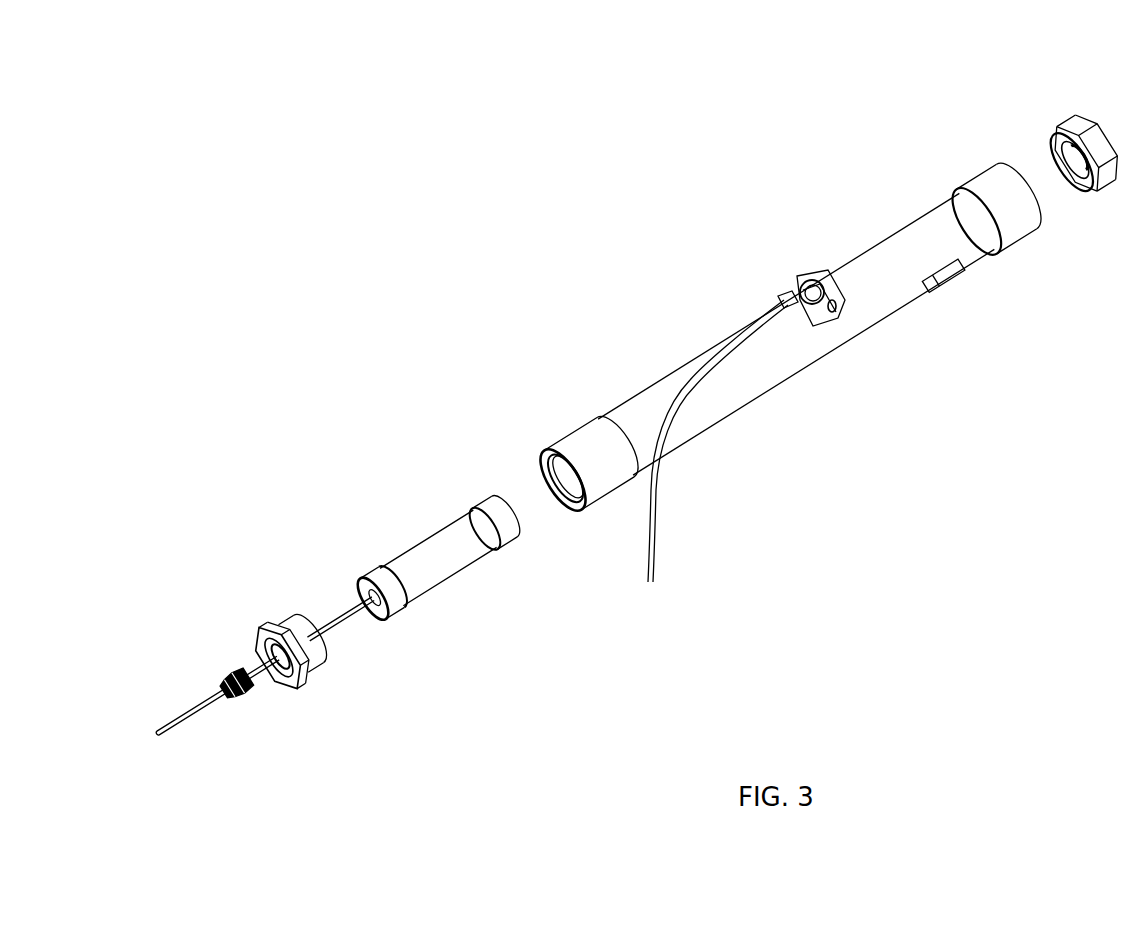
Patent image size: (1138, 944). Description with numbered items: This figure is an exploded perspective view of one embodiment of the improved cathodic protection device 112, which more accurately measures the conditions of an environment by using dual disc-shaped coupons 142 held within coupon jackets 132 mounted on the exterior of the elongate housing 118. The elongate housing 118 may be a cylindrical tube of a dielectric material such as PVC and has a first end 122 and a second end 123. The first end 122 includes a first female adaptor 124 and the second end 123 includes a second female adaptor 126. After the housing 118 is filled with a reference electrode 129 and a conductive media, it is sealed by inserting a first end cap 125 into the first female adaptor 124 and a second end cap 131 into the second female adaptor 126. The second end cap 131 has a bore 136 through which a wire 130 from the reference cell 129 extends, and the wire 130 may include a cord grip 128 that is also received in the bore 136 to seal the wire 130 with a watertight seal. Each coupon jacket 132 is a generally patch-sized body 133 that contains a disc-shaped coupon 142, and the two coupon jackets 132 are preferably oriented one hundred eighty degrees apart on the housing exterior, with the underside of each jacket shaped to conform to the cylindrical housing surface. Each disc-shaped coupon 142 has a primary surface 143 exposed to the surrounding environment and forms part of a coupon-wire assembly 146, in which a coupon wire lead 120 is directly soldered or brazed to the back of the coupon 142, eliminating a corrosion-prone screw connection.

The cathodic protection device 112 is at (541, 301).
The elongate housing 118 is at (703, 433).
The coupon wire lead 120 is at (748, 342).
The first end 122 is at (951, 211).
The second end 123 is at (622, 410).
The first female adaptor 124 is at (985, 178).
The first end cap 125 is at (1090, 120).
The second female adaptor 126 is at (605, 497).
The cord grip 128 is at (243, 699).
The reference electrode 129 is at (442, 584).
The wire 130 is at (193, 707).
The second end cap 131 is at (302, 690).
The coupon jacket 132 is at (779, 297).
The patch-sized body 133 is at (848, 302).
The bore 136 is at (267, 630).
The disc-shaped coupon 142 is at (836, 314).
The primary surface 143 is at (804, 285).
The coupon-wire assembly 146 is at (812, 265).